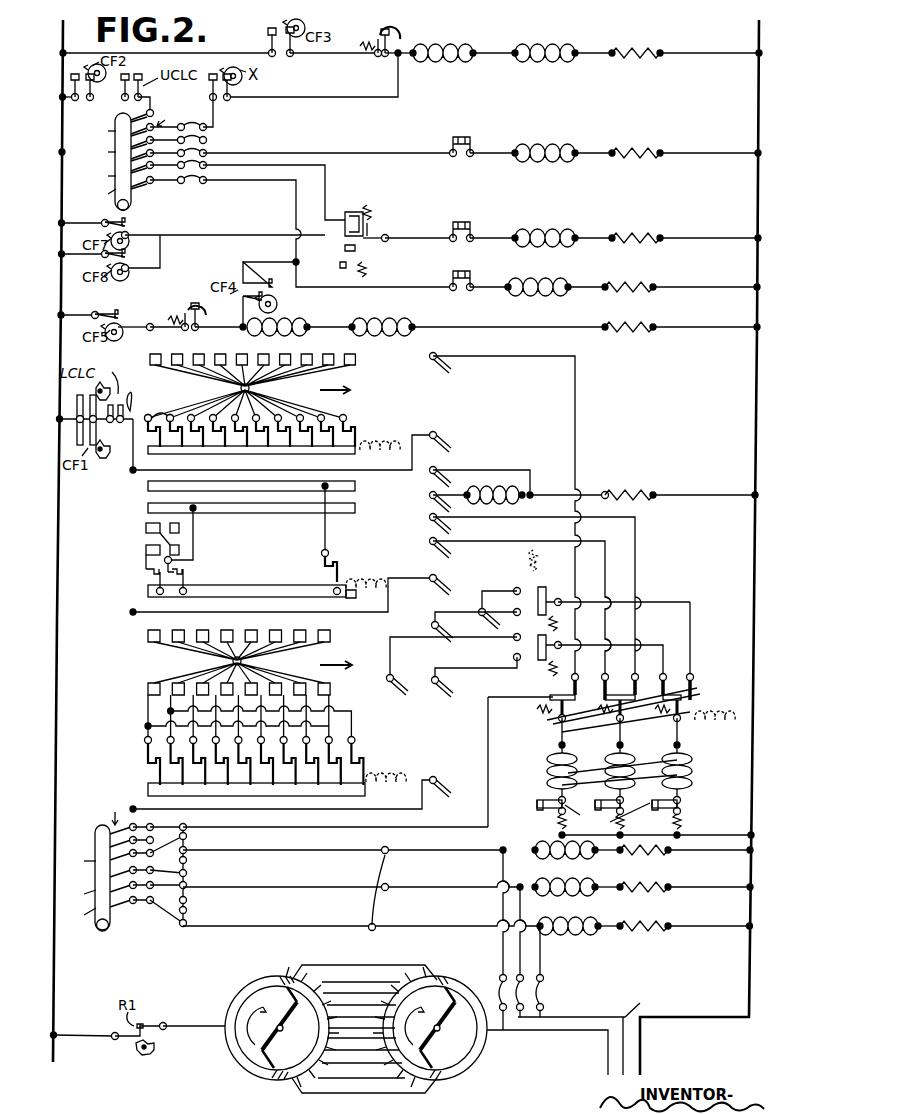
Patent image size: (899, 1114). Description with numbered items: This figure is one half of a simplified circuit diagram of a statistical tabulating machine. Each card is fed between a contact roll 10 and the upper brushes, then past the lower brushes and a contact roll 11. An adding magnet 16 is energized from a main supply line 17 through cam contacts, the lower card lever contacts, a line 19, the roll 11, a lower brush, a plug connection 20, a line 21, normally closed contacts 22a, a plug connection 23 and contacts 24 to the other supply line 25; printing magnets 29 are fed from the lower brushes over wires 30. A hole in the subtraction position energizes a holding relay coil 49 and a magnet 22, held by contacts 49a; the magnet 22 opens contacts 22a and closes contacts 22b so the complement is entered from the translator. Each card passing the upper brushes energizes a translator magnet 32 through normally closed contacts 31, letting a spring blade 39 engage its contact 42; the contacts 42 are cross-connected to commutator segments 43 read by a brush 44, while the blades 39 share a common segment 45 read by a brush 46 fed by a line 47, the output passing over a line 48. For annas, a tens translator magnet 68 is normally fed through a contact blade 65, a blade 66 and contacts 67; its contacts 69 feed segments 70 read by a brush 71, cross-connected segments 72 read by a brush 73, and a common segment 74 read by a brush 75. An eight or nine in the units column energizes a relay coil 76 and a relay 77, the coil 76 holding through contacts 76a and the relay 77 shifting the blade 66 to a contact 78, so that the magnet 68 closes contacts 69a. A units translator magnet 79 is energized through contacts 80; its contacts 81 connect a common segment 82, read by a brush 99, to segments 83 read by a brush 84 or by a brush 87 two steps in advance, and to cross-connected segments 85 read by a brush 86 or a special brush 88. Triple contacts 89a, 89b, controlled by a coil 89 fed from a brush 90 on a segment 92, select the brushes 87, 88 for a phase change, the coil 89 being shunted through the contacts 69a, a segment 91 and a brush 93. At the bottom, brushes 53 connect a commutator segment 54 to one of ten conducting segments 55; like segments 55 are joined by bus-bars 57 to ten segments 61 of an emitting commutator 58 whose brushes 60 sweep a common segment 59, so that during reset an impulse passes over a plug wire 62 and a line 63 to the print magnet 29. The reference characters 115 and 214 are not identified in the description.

The contact roll 10 is at (129, 205).
The contact roll 11 is at (95, 830).
The electromagnet 16 is at (560, 782).
The main supply line 17 is at (61, 152).
The line 19 is at (132, 610).
The plug connection 20 is at (167, 844).
The line 21 is at (386, 850).
The magnet 22 is at (548, 58).
The normally closed contacts 22a is at (555, 726).
The contacts 22b is at (690, 683).
The plug connection 23 is at (608, 732).
The contacts 24 is at (610, 820).
The supply line 25 is at (758, 200).
The printing magnets 29 is at (595, 893).
The wires 30 is at (388, 854).
The normally closed contacts 31 is at (468, 137).
The translator magnet 32 is at (549, 150).
The spring blades 39 is at (148, 450).
The contacts 42 is at (159, 418).
The commutator segments 43 is at (148, 358).
The brush 44 is at (447, 362).
The common segment 45 is at (133, 470).
The brush 46 is at (448, 440).
The line 47 is at (366, 474).
The line 48 is at (576, 376).
The holding relay coil 49 is at (447, 56).
The contacts 49a is at (387, 44).
The brushes 53 is at (446, 1005).
The commutator segment 54 is at (443, 1023).
The conducting segments 55 is at (430, 1032).
The bus-bars 57 is at (344, 1062).
The emitting commutator 58 is at (268, 1019).
The common segment 59 is at (238, 1057).
The brushes 60 is at (278, 984).
The segments 61 is at (283, 1029).
The plug wire 62 is at (537, 1000).
The line 63 is at (535, 945).
The contact blade 65 is at (357, 216).
The blade 66 is at (358, 246).
The contacts 67 is at (468, 222).
The tens translator magnet 68 is at (551, 235).
The contacts 69 is at (150, 580).
The contacts 69a is at (330, 568).
The commutator segments 70 is at (164, 558).
The brush 71 is at (447, 552).
The segments 72 is at (160, 528).
The brush 73 is at (447, 526).
The common segment 74 is at (148, 592).
The brush 75 is at (447, 582).
The relay coil 76 is at (290, 322).
The contacts 76a is at (190, 310).
The relay 77 is at (382, 322).
The contact 78 is at (352, 272).
The units translator magnet 79 is at (540, 284).
The units translator contacts 80 is at (454, 272).
The contacts 81 is at (150, 766).
The common segment 82 is at (148, 788).
The commutator segments 83 is at (148, 688).
The brush 84 is at (450, 692).
The segments 85 is at (148, 638).
The brush 86 is at (445, 627).
The second brush 87 is at (405, 692).
The special brush 88 is at (492, 620).
The coil 89 is at (523, 490).
The triple contacts 89a is at (536, 646).
The triple contacts 89b is at (548, 596).
The brush 90 is at (447, 494).
The segment 91 is at (148, 486).
The commutator segment 92 is at (148, 508).
The brush 93 is at (447, 468).
The brush 99 is at (448, 784).
The conductor 115 is at (607, 1046).
The conductor 214 is at (596, 1032).